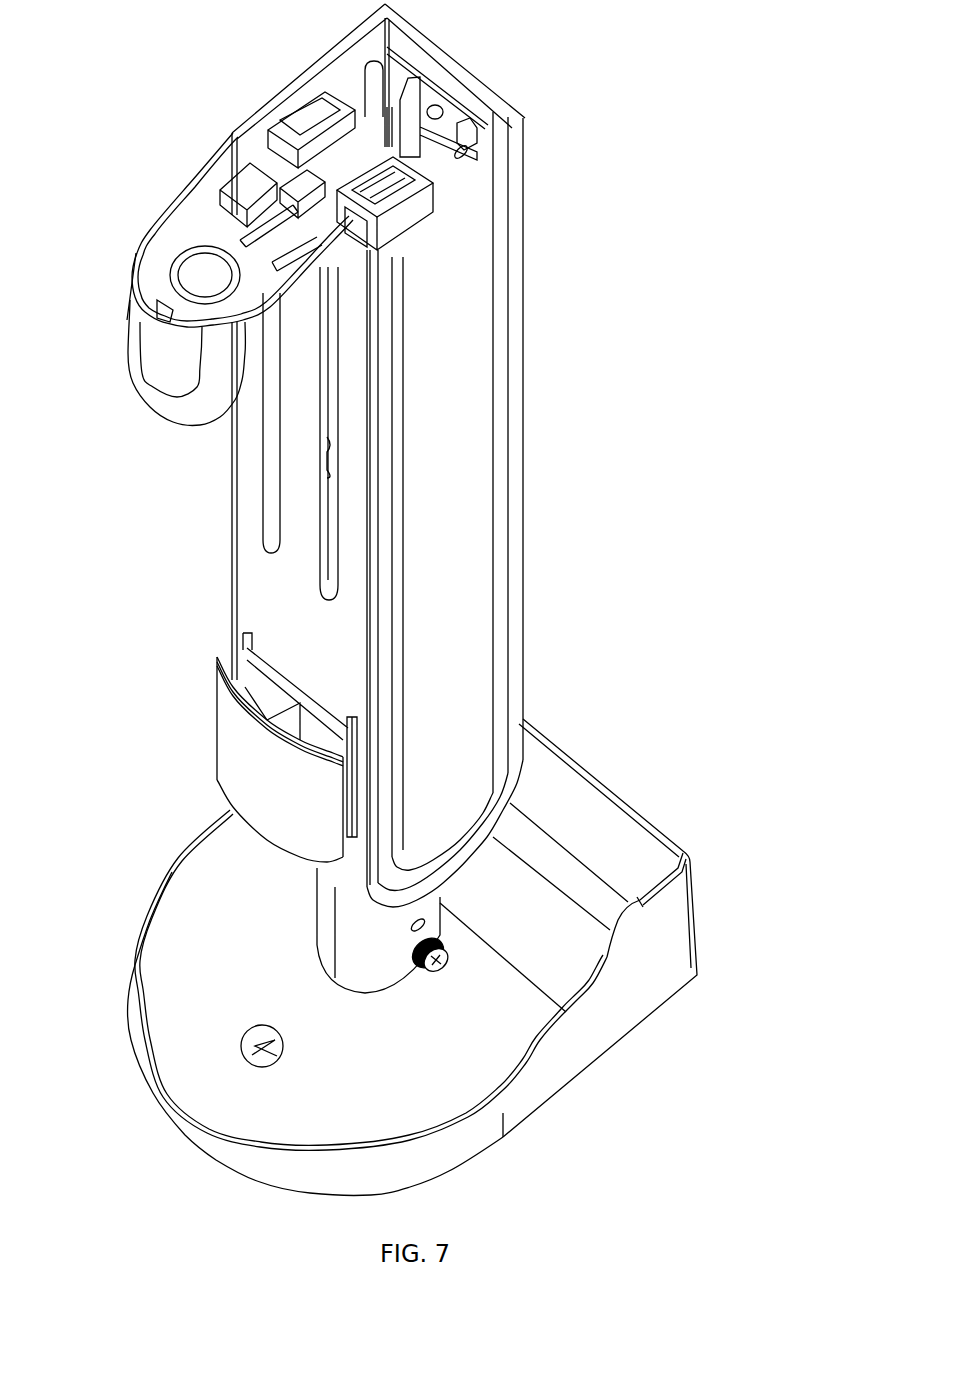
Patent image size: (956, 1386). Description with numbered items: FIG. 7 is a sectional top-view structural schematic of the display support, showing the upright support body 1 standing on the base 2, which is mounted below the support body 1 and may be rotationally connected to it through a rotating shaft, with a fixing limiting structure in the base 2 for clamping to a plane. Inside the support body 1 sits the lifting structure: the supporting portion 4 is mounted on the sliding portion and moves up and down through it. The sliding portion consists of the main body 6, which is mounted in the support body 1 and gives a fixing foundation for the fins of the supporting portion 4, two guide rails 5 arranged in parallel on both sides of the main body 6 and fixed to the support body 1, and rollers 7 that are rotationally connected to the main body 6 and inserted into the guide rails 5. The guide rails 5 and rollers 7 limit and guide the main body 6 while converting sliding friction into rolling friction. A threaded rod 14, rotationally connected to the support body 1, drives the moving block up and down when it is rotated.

The support body 1 is at (450, 530).
The base 2 is at (603, 830).
The supporting portion 4 is at (205, 275).
The guide rail 5 is at (410, 195).
The main body 6 is at (343, 157).
The roller 7 is at (387, 180).
The threaded rod 14 is at (447, 110).